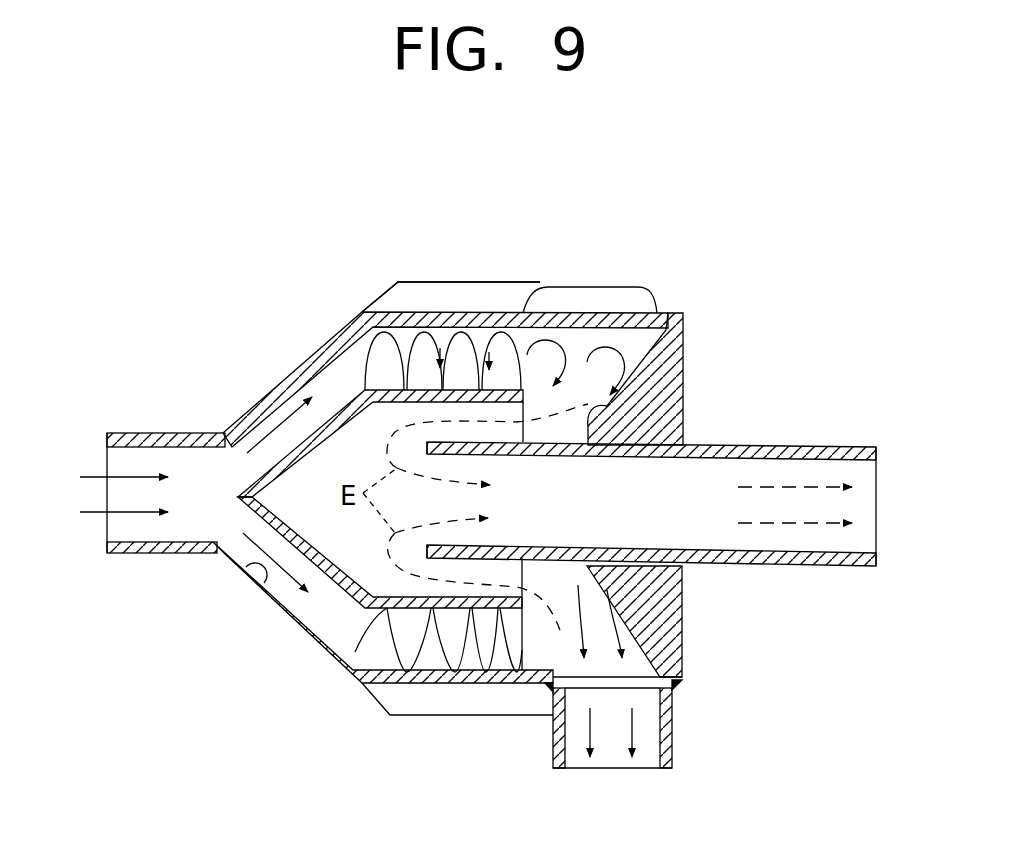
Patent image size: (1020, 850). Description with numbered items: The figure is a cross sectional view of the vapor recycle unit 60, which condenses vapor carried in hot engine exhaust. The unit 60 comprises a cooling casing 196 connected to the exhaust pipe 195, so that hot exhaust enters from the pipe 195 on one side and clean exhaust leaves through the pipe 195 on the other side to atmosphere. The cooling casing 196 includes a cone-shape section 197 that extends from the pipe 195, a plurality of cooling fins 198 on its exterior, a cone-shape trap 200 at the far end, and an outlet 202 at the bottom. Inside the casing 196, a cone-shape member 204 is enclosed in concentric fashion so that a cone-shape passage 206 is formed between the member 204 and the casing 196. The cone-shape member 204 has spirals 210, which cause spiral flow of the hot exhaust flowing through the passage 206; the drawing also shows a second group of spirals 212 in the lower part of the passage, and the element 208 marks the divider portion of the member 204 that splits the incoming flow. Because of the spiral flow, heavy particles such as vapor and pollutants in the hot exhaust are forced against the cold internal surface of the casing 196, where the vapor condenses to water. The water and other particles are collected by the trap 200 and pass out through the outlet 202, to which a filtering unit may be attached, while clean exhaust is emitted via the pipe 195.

The vapor recycle unit 60 is at (641, 270).
The exhaust pipe 195 is at (155, 432).
The cooling casing 196 is at (523, 313).
The cone-shape section 197 is at (285, 377).
The cooling fins 198 is at (413, 300).
The cone-shape trap 200 is at (607, 407).
The outlet 202 is at (670, 747).
The cone-shape member 204 is at (316, 640).
The cone-shape passage 206 is at (262, 594).
The flow divider 208 is at (338, 596).
The spirals 210 is at (455, 642).
The vortex 212 is at (470, 600).